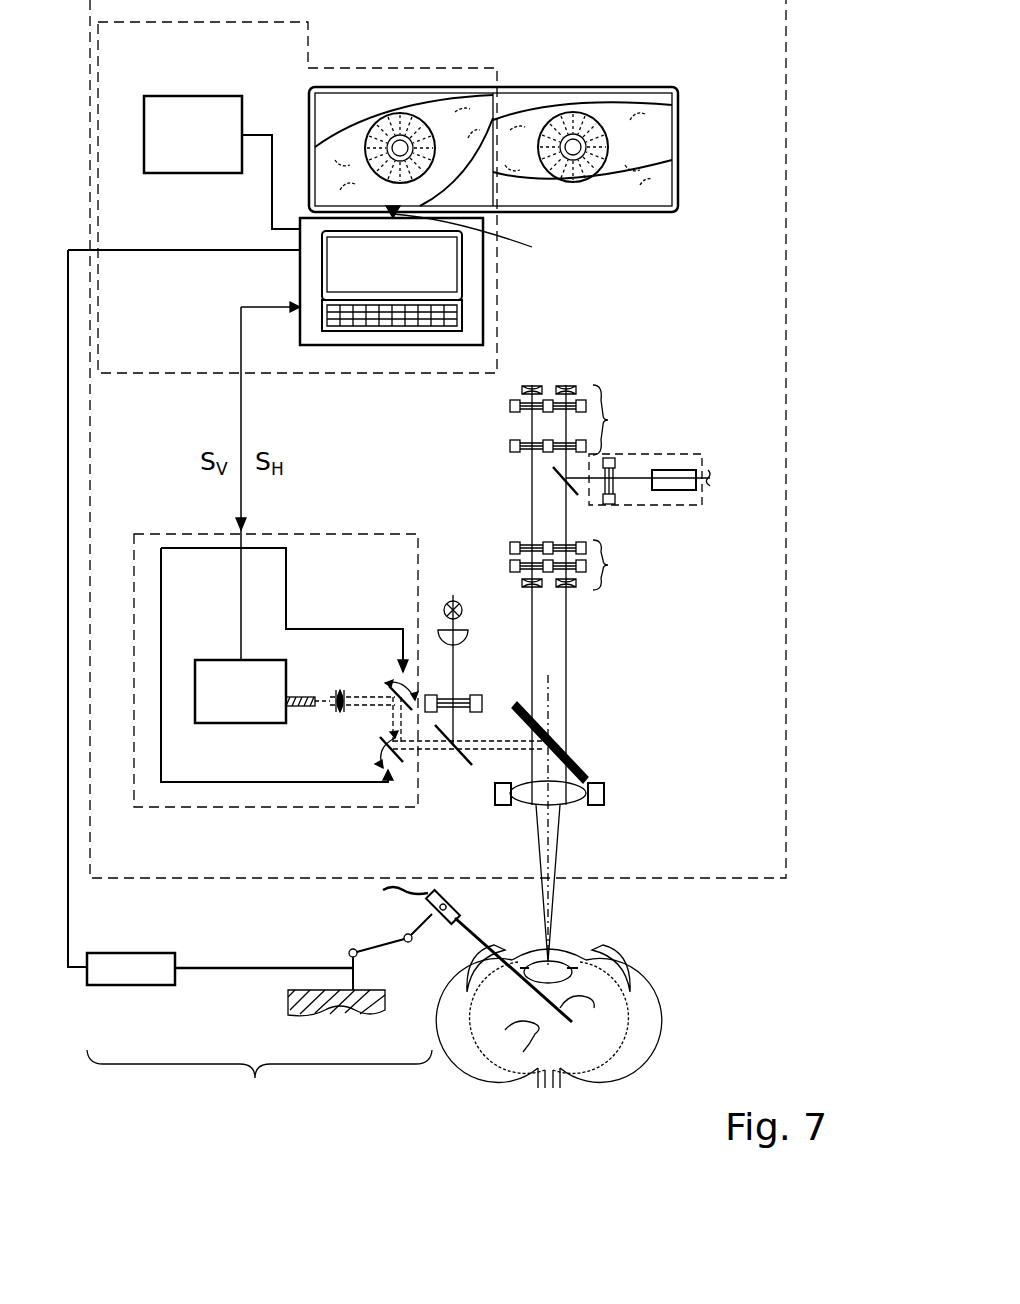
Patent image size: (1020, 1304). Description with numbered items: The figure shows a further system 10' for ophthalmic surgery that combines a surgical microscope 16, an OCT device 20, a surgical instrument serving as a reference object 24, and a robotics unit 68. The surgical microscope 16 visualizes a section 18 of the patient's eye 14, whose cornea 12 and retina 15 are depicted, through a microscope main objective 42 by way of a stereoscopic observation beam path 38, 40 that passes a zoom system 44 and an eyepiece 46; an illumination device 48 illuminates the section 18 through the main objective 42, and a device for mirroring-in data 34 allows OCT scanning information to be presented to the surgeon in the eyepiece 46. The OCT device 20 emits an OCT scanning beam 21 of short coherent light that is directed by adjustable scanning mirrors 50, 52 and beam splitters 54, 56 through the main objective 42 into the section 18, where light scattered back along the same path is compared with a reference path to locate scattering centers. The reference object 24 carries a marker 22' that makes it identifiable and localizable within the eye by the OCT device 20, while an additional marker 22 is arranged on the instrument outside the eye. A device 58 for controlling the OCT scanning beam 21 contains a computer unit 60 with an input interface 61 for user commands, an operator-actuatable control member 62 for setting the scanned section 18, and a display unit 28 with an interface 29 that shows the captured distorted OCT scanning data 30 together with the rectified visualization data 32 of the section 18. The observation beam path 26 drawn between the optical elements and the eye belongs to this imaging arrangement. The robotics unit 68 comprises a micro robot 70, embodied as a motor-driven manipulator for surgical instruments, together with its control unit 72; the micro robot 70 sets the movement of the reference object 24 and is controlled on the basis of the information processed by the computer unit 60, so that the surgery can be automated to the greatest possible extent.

The further system 10' is at (766, 976).
The cornea 12 is at (537, 948).
The patient's eye 14 is at (605, 1037).
The retina 15 is at (495, 1024).
The surgical microscope 16 is at (682, 878).
The section of the patient's eye 18 is at (485, 947).
The OCT device 20 is at (238, 808).
The OCT scanning beam 21 is at (433, 750).
The additional marker 22 is at (513, 932).
The marker 22' is at (623, 1013).
The reference object 24 is at (429, 899).
The observation beam path 26 is at (550, 712).
The display unit 28 is at (432, 87).
The interface 29 is at (478, 239).
The OCT scanning data 30 is at (474, 115).
The rectified visualization data 32 is at (612, 115).
The device for mirroring-in data 34 is at (672, 454).
The stereoscopic observation beam path 38 is at (532, 520).
The stereoscopic observation beam path 40 is at (566, 522).
The microscope main objective 42 is at (578, 805).
The zoom system 44 is at (577, 565).
The eyepiece 46 is at (577, 420).
The illumination device 48 is at (452, 598).
The adjustable scanning mirror 50 is at (389, 690).
The adjustable scanning mirror 52 is at (380, 737).
The beam splitter 54 is at (464, 760).
The beam splitter 56 is at (585, 770).
The device for controlling the OCT scanning beam 58 is at (372, 68).
The computer unit 60 is at (300, 278).
The input interface 61 is at (403, 331).
The control member 62 is at (196, 95).
The robotics unit 68 is at (259, 1037).
The micro robot 70 is at (358, 951).
The control unit 72 is at (131, 953).